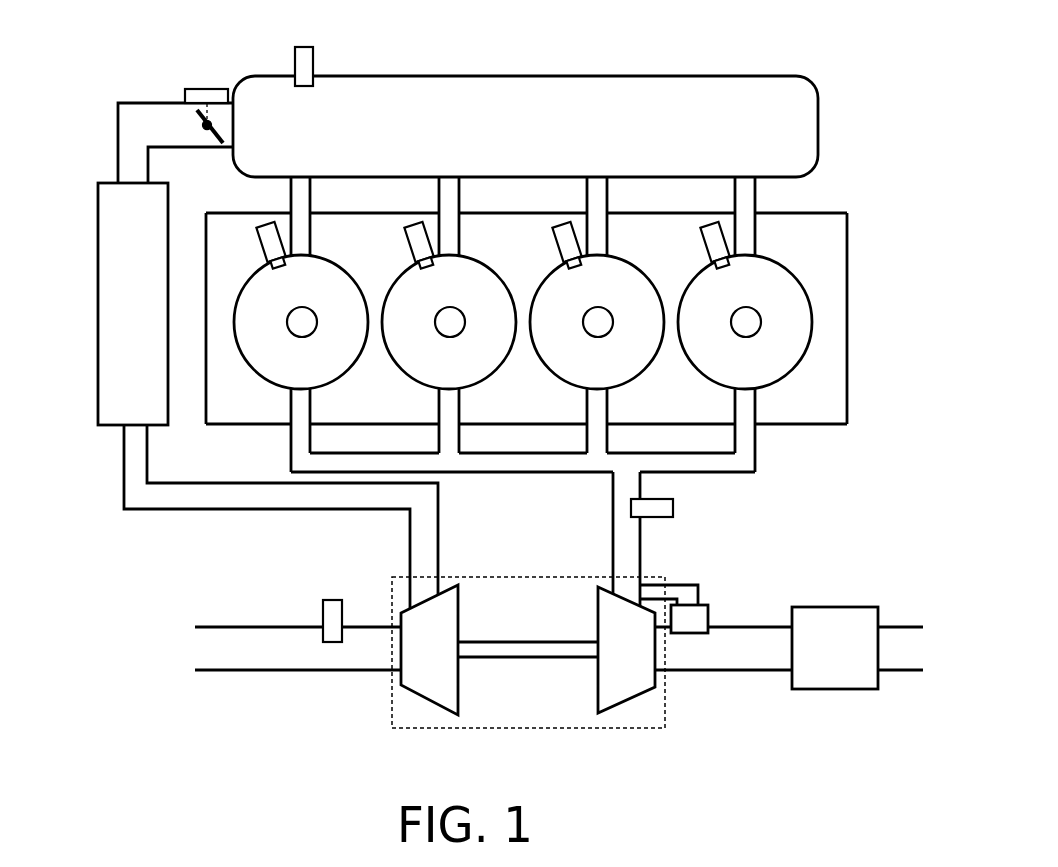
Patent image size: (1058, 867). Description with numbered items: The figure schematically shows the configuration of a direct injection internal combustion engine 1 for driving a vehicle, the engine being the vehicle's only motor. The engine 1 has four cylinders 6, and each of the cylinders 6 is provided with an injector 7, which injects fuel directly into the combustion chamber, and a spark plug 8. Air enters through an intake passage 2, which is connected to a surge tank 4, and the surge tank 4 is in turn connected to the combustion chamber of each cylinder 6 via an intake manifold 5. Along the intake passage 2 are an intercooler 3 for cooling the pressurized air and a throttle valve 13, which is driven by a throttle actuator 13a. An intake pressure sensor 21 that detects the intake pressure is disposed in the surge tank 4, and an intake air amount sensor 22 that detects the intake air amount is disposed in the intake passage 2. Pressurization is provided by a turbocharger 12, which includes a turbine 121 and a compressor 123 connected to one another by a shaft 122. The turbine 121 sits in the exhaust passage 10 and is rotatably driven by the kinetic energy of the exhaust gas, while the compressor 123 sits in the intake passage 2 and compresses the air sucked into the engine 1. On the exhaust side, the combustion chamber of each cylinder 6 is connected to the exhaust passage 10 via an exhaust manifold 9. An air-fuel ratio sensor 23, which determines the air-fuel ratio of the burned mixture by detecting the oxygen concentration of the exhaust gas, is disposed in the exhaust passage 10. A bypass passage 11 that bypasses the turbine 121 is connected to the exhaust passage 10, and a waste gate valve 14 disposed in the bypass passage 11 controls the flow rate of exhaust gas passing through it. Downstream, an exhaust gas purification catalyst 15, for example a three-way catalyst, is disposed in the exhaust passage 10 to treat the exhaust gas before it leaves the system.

The internal combustion engine 1 is at (832, 77).
The intake passage 2 is at (203, 512).
The intercooler 3 is at (97, 281).
The surge tank 4 is at (467, 76).
The intake manifold 5 is at (291, 195).
The cylinders 6 is at (322, 257).
The injector 7 is at (262, 250).
The spark plug 8 is at (290, 312).
The exhaust manifold 9 is at (290, 440).
The exhaust passage 10 is at (641, 547).
The bypass passage 11 is at (700, 586).
The turbocharger 12 is at (392, 702).
The throttle valve 13 is at (198, 114).
The throttle actuator 13a is at (206, 88).
The waste gate valve 14 is at (709, 612).
The exhaust gas purification catalyst 15 is at (830, 606).
The intake pressure sensor 21 is at (301, 46).
The intake air amount sensor 22 is at (335, 600).
The air-fuel ratio sensor 23 is at (674, 508).
The turbine 121 is at (628, 700).
The shaft 122 is at (526, 640).
The compressor 123 is at (423, 700).